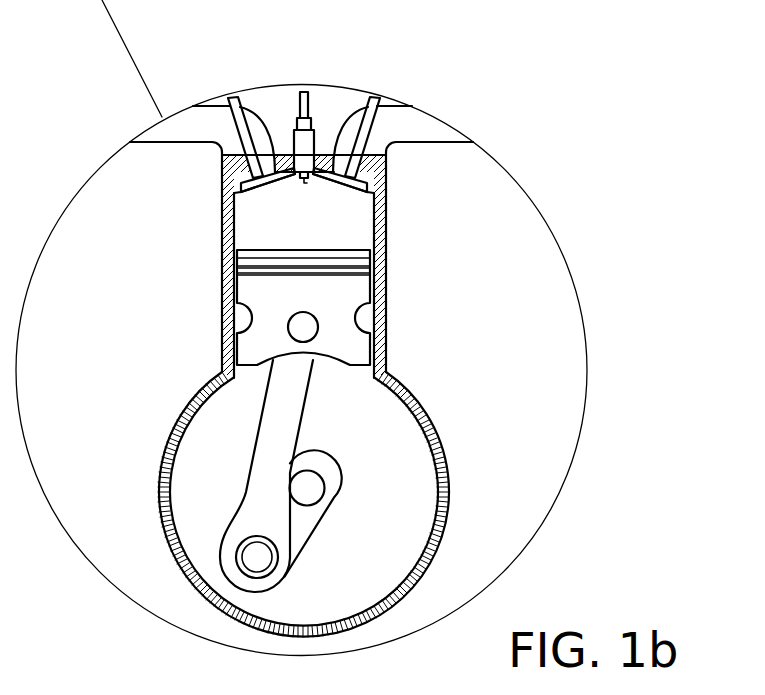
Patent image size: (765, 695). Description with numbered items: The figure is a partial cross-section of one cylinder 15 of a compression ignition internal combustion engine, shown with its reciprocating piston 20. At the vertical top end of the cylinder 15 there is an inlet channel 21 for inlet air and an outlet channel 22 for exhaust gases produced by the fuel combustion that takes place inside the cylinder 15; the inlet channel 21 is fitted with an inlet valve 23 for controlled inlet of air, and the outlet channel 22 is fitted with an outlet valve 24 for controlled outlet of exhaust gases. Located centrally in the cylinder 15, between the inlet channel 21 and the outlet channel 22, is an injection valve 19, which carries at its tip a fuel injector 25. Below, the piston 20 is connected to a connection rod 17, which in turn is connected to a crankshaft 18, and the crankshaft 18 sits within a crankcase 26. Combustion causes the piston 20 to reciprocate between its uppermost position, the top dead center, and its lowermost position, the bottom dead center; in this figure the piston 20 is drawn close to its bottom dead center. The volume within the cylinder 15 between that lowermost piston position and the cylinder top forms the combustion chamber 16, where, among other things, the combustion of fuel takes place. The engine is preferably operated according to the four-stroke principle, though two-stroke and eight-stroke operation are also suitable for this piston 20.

The cylinder 15 is at (210, 242).
The combustion chamber 16 is at (291, 233).
The connection rod 17 is at (277, 425).
The crankshaft 18 is at (308, 489).
The injection valve 19 is at (298, 117).
The piston 20 is at (330, 249).
The inlet channel 21 is at (383, 102).
The outlet channel 22 is at (207, 107).
The inlet valve 23 is at (351, 108).
The outlet valve 24 is at (252, 118).
The fuel injector 25 is at (307, 183).
The crankcase 26 is at (452, 479).